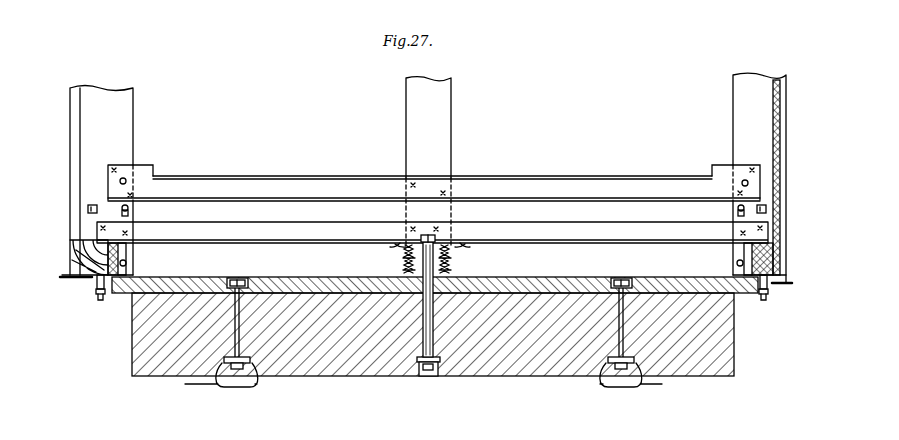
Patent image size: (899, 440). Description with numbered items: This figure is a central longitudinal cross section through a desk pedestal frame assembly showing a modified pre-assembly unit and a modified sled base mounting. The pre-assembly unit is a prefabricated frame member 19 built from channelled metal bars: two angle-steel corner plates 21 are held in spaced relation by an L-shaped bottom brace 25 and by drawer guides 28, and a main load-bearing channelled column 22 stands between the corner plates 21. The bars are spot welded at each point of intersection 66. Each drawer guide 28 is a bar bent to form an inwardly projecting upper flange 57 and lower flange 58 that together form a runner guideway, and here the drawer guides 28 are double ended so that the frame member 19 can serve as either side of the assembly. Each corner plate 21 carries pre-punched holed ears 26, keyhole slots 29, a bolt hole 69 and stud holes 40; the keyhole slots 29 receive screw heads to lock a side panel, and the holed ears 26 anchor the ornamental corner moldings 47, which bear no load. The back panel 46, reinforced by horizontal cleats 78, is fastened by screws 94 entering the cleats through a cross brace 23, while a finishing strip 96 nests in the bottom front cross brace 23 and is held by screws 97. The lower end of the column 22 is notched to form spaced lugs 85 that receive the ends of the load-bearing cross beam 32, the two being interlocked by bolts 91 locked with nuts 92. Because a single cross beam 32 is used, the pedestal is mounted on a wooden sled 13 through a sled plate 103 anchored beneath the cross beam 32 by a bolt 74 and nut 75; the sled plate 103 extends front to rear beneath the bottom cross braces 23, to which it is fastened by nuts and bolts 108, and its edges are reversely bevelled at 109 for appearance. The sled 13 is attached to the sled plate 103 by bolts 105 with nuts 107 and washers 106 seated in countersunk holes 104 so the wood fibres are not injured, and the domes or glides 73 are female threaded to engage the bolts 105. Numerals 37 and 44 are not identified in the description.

The sled 13 is at (734, 348).
The frame member 19 is at (461, 101).
The corner plate 21 is at (125, 117).
The channelled column 22 is at (443, 126).
The cross brace 23 is at (126, 268).
The L-shaped bottom brace 25 is at (323, 237).
The holed ear 26 is at (88, 207).
The drawer guide 28 is at (326, 178).
The keyhole slot 29 is at (128, 211).
The load-bearing cross beam 32 is at (441, 240).
The base plate 37 is at (794, 284).
The stud hole 40 is at (126, 181).
The anchor 44 is at (97, 283).
The back panel 46 is at (778, 118).
The corner molding 47 is at (70, 120).
The upper flange 57 is at (527, 178).
The lower flange 58 is at (609, 212).
The point of intersection 66 is at (122, 193).
The bolt hole 69 is at (124, 266).
The dome or glide 73 is at (237, 380).
The bolt 74 is at (430, 310).
The nut 75 is at (432, 376).
The cleat 78 is at (777, 256).
The lug 85 is at (400, 243).
The bolt 91 is at (405, 270).
The nut 92 is at (455, 259).
The screw 94 is at (752, 251).
The finishing strip 96 is at (75, 244).
The screw 97 is at (118, 257).
The sled plate 103 is at (128, 295).
The countersunk hole 104 is at (229, 280).
The bolt 105 is at (237, 320).
The washer 106 is at (248, 283).
The nut 107 is at (242, 372).
The nuts and bolts 108 is at (100, 292).
The bevelled edge 109 is at (100, 298).